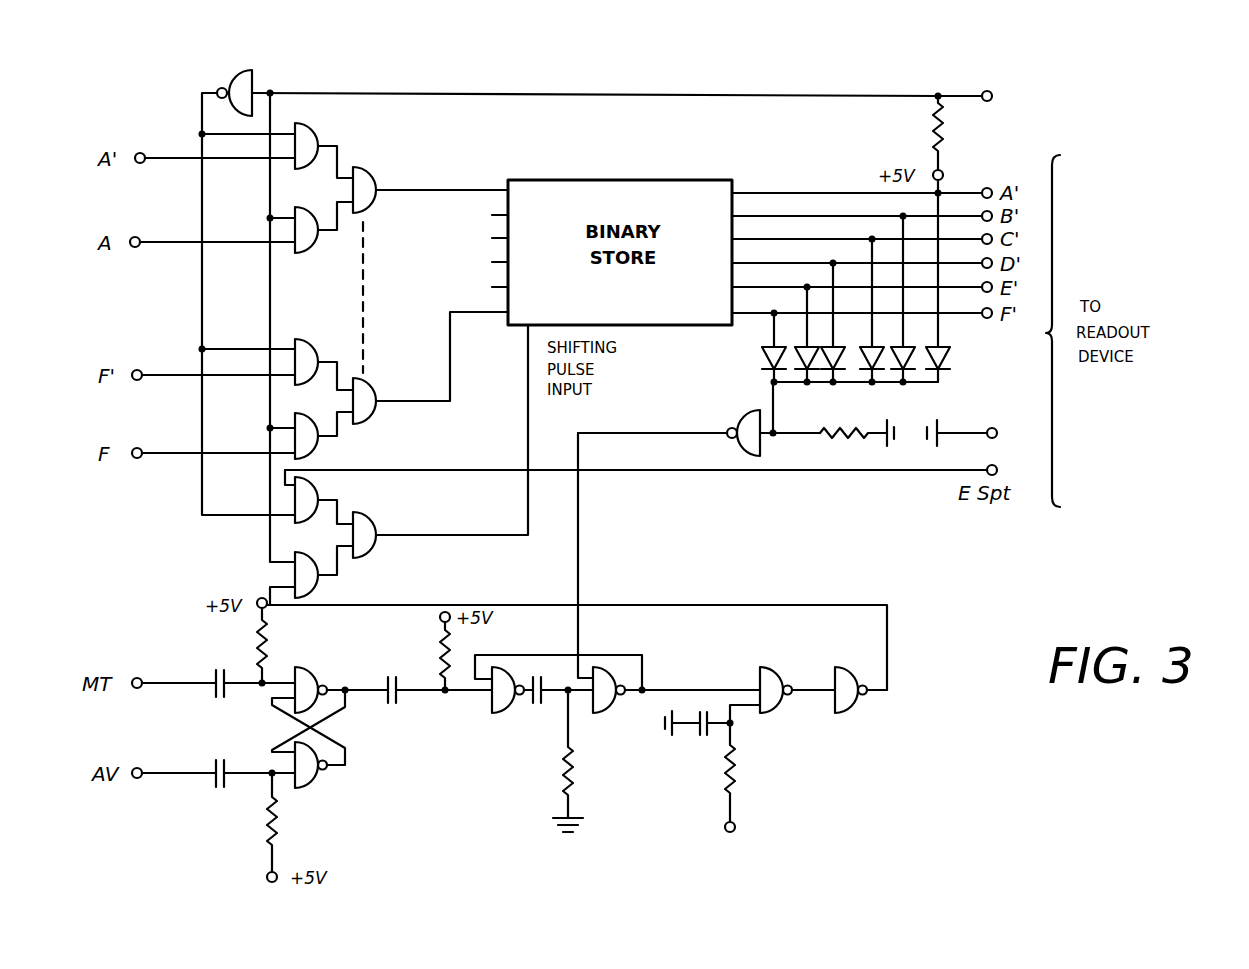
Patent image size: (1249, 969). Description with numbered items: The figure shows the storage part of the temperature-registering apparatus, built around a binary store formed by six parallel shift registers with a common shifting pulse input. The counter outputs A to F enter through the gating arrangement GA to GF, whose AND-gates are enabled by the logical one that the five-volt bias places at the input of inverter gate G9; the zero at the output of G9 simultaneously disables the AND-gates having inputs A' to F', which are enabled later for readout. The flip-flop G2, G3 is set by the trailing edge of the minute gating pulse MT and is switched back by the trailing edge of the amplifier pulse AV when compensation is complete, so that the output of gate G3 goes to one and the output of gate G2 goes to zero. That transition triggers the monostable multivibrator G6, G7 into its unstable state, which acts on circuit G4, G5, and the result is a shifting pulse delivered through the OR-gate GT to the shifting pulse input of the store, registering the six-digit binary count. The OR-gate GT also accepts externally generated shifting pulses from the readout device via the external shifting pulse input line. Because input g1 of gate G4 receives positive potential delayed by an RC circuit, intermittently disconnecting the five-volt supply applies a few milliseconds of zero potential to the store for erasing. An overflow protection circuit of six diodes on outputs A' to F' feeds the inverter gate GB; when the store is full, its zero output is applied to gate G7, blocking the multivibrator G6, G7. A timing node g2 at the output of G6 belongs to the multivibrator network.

The inverter gate G9 is at (237, 83).
The gate GA of the gating arrangement GA is at (430, 184).
The gate GF of the gating arrangement GF is at (430, 368).
The OR-gate GT is at (440, 441).
The inverter gate G8 (overflow protection) GB is at (699, 425).
The gate G2 of the flip-flop G2 is at (341, 678).
The gate G3 of the flip-flop G3 is at (308, 750).
The gate G4 of circuit G4, G5 G4 is at (797, 707).
The gate G5 of circuit G4 G5 is at (861, 706).
The gate G6 of the monostable multivibrator G6 is at (558, 701).
The gate G7 of the monostable multivibrator G7 is at (676, 706).
The input g1 of gate G4 g1 is at (712, 768).
The node g2 is at (573, 760).